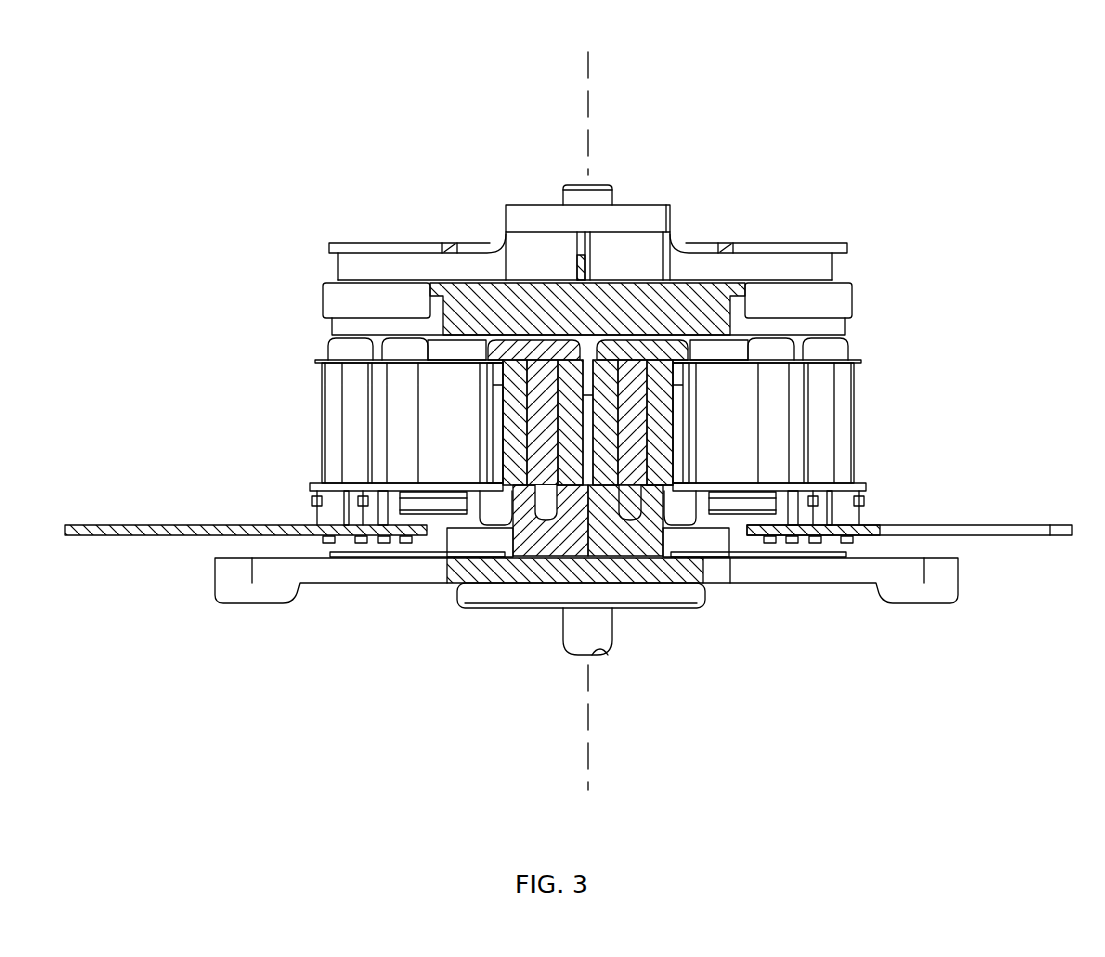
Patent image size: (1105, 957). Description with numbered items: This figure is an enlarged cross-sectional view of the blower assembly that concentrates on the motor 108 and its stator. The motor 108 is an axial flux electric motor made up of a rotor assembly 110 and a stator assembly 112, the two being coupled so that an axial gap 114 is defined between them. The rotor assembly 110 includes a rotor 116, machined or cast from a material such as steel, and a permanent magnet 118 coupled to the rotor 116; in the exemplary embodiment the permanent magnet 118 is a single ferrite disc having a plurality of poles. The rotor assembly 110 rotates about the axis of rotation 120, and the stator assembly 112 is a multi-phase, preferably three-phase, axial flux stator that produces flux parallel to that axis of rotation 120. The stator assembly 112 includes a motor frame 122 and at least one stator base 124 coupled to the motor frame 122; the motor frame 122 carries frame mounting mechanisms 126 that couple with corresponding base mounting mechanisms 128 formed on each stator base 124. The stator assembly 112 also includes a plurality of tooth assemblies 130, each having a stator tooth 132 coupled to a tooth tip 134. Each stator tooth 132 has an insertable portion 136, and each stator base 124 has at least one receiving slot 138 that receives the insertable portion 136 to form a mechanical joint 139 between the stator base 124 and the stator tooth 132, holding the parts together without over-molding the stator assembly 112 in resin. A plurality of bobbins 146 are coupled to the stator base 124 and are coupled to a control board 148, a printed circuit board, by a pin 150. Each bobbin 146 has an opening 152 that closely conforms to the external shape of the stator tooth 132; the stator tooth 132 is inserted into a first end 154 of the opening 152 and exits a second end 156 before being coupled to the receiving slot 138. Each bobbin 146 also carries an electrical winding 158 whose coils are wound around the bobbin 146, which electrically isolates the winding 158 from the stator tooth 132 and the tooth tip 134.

The motor 108 is at (925, 196).
The rotor assembly 110 is at (862, 287).
The stator assembly 112 is at (872, 330).
The axial gap 114 is at (308, 338).
The rotor 116 is at (355, 298).
The permanent magnet 118 is at (460, 318).
The axis of rotation 120 is at (588, 107).
The motor frame 122 is at (890, 570).
The stator base 124 is at (440, 535).
The frame mounting mechanism 126 is at (387, 562).
The base mounting mechanism 128 is at (602, 650).
The tooth assembly 130 is at (518, 407).
The stator tooth 132 is at (535, 437).
The tooth tip 134 is at (533, 352).
The insertable portion 136 is at (547, 535).
The receiving slot 138 is at (562, 528).
The mechanical joint 139 is at (655, 555).
The bobbin 146 is at (667, 453).
The control board 148 is at (860, 527).
The pin 150 is at (857, 548).
The opening 152 is at (664, 433).
The first end 154 is at (664, 370).
The second end 156 is at (664, 477).
The electrical winding 158 is at (660, 407).